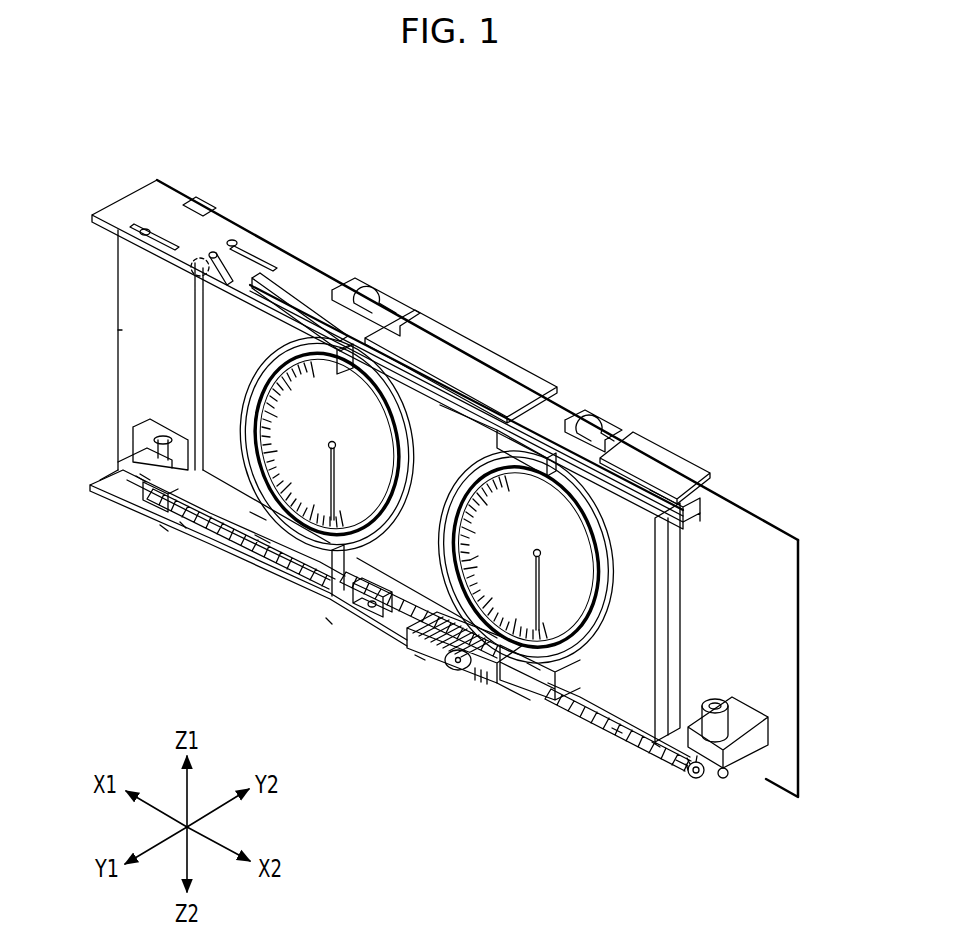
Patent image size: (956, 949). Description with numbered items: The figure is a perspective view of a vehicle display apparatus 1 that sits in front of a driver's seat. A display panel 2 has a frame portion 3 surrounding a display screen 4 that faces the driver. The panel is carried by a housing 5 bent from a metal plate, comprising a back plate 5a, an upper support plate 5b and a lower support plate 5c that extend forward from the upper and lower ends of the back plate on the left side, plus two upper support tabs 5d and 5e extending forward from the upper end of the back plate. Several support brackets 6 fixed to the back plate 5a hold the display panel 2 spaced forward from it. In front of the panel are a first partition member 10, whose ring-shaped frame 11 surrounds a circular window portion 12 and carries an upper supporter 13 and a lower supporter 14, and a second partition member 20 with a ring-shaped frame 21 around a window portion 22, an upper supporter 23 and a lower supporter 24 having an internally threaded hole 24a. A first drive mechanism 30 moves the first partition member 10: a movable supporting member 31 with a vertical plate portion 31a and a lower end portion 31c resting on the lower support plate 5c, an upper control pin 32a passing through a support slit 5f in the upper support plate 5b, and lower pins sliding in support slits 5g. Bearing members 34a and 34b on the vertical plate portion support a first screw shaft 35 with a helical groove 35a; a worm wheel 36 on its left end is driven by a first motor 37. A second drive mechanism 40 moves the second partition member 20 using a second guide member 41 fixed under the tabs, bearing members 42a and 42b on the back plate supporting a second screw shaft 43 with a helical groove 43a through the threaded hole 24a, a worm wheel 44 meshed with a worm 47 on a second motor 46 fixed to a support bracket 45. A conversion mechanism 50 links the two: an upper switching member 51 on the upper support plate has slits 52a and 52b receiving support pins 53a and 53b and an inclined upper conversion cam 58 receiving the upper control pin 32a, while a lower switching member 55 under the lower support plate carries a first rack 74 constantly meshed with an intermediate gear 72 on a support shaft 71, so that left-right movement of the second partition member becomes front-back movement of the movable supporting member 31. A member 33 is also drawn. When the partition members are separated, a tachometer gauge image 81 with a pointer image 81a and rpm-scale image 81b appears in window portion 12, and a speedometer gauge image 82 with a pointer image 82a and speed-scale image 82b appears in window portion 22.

The vehicle display apparatus 1 is at (560, 330).
The display panel 2 is at (676, 638).
The frame portion 3 is at (670, 680).
The display screen 4 is at (580, 714).
The housing 5 is at (808, 586).
The back plate 5a is at (763, 547).
The upper support plate 5b is at (152, 190).
The lower support plate 5c is at (107, 483).
The upper support tab 5d is at (460, 355).
The upper support tab 5e is at (655, 452).
The support slit 5f is at (195, 274).
The support slits 5g is at (182, 525).
The support brackets 6 is at (365, 300).
The first partition member 10 is at (406, 438).
The ring-shaped frame 11 is at (385, 407).
The window portion 12 is at (258, 423).
The upper supporter 13 is at (362, 368).
The lower supporter 14 is at (340, 552).
The second partition member 20 is at (611, 580).
The ring-shaped frame 21 is at (581, 537).
The window portion 22 is at (473, 560).
The upper supporter 23 is at (560, 495).
The lower supporter 24 is at (580, 663).
The internally threaded hole 24a is at (533, 670).
The first drive mechanism 30 is at (96, 437).
The movable supporting member 31 is at (116, 367).
The vertical plate portion 31a is at (120, 330).
The lower end portion 31c is at (117, 467).
The upper control pin 32a is at (218, 253).
The frame bar 33 is at (262, 330).
The bearing member 34a is at (155, 495).
The bearing member 34b is at (360, 602).
The first screw shaft 35 is at (273, 562).
The helical groove 35a is at (263, 538).
The worm wheel 36 is at (140, 480).
The first motor 37 is at (155, 455).
The second drive mechanism 40 is at (772, 692).
The second guide member 41 is at (688, 503).
The bearing member 42a is at (257, 515).
The bearing member 42b is at (678, 765).
The second screw shaft 43 is at (655, 746).
The helical groove 43a is at (617, 731).
The worm wheel 44 is at (702, 774).
The support bracket 45 is at (746, 746).
The second motor 46 is at (710, 714).
The worm 47 is at (725, 777).
The conversion mechanism 50 is at (407, 655).
The upper switching member 51 is at (130, 220).
The slit 52a is at (175, 248).
The slit 52b is at (298, 250).
The support pin 53a is at (145, 228).
The support pin 53b is at (238, 240).
The lower switching member 55 is at (163, 527).
The upper conversion cam 58 is at (219, 285).
The support shaft 71 is at (448, 680).
The intermediate gear 72 is at (482, 686).
The first rack 74 is at (422, 672).
The gauge image 81 is at (368, 475).
The pointer image 81a is at (330, 477).
The rpm-scale image 81b is at (300, 386).
The gauge image 82 is at (605, 626).
The pointer image 82a is at (532, 583).
The speed-scale image 82b is at (484, 510).